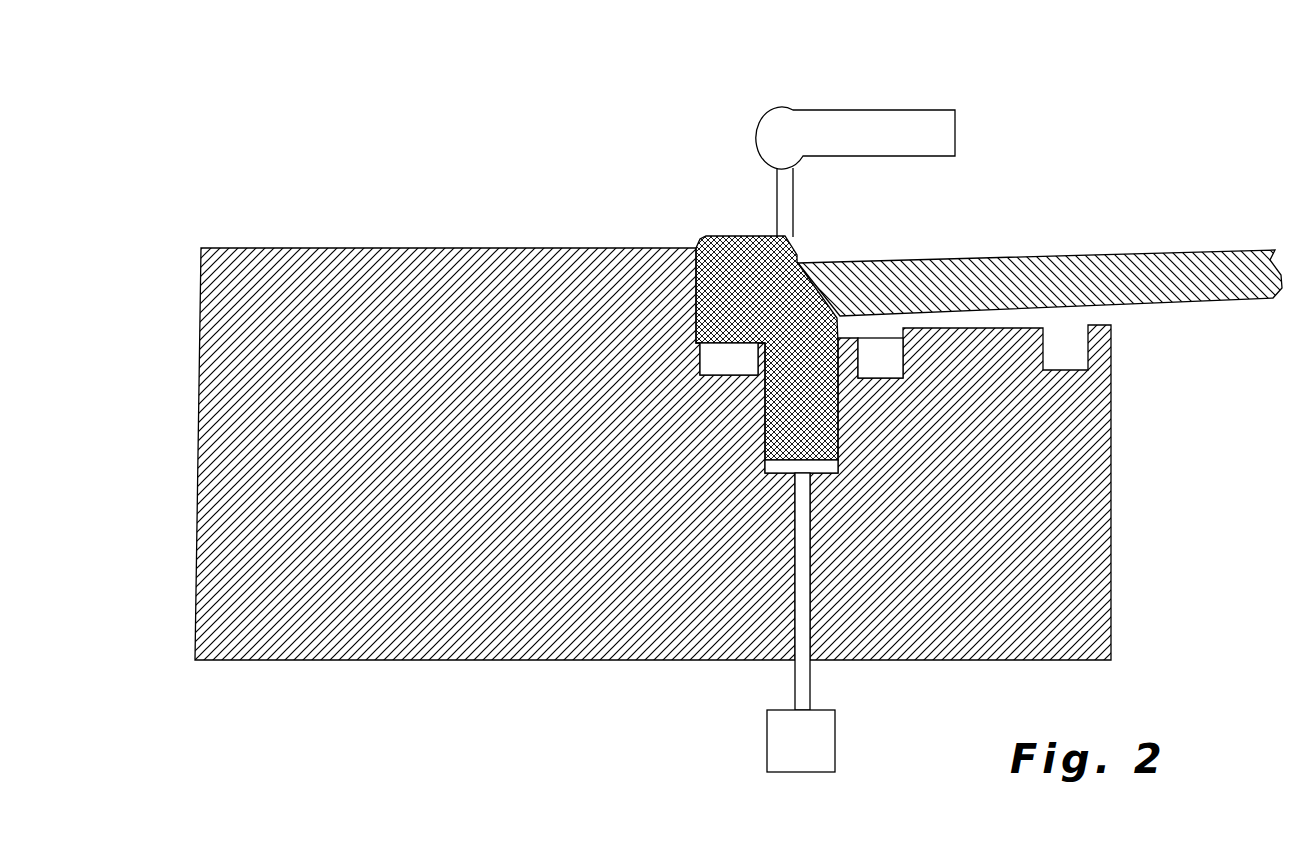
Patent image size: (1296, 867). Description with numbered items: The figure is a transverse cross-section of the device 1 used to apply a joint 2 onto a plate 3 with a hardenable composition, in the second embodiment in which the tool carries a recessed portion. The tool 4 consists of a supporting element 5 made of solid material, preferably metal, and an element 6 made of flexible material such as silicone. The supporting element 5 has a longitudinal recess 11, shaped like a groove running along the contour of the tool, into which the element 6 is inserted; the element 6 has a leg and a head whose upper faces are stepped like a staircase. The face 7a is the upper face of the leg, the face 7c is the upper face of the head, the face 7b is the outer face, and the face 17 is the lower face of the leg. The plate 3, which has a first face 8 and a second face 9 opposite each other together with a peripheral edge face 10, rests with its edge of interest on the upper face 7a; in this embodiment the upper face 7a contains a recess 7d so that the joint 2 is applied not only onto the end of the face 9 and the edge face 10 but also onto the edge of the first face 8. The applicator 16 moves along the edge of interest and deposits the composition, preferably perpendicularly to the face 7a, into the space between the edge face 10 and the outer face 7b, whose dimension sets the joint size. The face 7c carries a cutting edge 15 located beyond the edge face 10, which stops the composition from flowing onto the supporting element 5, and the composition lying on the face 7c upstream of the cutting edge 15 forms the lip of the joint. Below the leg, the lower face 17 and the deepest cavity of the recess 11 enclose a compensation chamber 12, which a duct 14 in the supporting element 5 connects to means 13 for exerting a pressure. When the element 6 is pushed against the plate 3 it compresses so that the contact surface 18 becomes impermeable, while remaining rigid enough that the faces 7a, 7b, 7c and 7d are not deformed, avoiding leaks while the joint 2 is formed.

The device 1 is at (338, 152).
The joint 2 is at (818, 256).
The plate 3 is at (1003, 285).
The tool 4 is at (180, 383).
The supporting element made of solid material 5 is at (338, 633).
The element made of flexible material 6 is at (695, 241).
The upper face of the leg 7a is at (798, 247).
The outer face 7b is at (768, 245).
The upper face of the head 7c is at (742, 240).
The recess 7d is at (837, 328).
The first face 8 is at (1158, 300).
The second face 9 is at (1108, 256).
The peripheral edge face 10 is at (855, 262).
The longitudinal recess 11 is at (738, 358).
The compensation chamber 12 is at (800, 464).
The means for exerting a pressure 13 is at (805, 740).
The duct 14 is at (783, 660).
The cutting edge 15 is at (698, 240).
The applicator 16 is at (857, 128).
The lower face of the leg 17 is at (790, 478).
The contact surface 18 is at (900, 265).